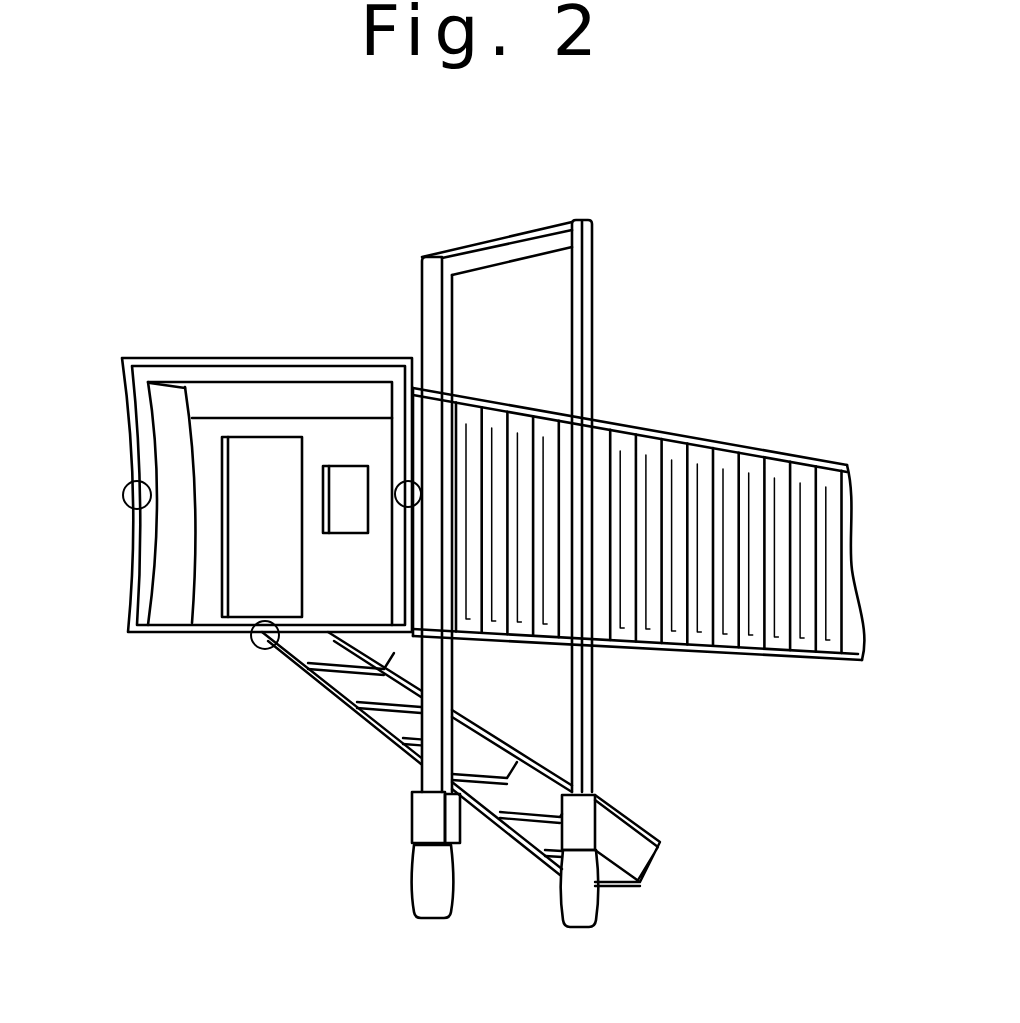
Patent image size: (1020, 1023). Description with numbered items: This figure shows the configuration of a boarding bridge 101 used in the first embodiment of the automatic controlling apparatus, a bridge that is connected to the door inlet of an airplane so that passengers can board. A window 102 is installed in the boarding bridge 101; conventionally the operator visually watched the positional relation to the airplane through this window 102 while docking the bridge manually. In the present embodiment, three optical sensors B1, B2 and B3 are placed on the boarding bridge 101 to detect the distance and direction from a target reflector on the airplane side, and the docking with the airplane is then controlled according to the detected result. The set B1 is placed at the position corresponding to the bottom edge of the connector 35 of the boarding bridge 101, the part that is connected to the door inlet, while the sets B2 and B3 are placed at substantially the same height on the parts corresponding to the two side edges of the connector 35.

The boarding bridge 101 is at (228, 393).
The window 102 is at (348, 480).
The connector 35 is at (257, 550).
The optical sensor B1 is at (253, 648).
The optical sensor B2 is at (404, 507).
The optical sensor B3 is at (123, 493).